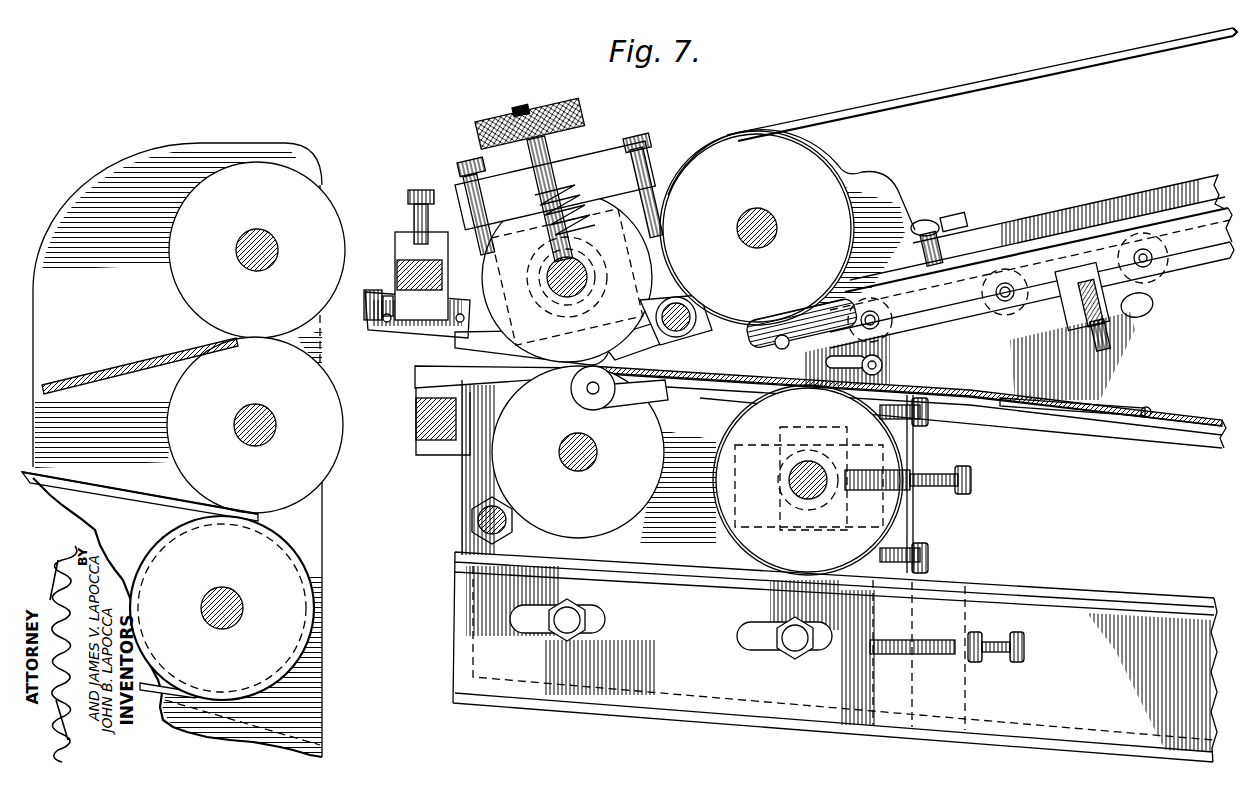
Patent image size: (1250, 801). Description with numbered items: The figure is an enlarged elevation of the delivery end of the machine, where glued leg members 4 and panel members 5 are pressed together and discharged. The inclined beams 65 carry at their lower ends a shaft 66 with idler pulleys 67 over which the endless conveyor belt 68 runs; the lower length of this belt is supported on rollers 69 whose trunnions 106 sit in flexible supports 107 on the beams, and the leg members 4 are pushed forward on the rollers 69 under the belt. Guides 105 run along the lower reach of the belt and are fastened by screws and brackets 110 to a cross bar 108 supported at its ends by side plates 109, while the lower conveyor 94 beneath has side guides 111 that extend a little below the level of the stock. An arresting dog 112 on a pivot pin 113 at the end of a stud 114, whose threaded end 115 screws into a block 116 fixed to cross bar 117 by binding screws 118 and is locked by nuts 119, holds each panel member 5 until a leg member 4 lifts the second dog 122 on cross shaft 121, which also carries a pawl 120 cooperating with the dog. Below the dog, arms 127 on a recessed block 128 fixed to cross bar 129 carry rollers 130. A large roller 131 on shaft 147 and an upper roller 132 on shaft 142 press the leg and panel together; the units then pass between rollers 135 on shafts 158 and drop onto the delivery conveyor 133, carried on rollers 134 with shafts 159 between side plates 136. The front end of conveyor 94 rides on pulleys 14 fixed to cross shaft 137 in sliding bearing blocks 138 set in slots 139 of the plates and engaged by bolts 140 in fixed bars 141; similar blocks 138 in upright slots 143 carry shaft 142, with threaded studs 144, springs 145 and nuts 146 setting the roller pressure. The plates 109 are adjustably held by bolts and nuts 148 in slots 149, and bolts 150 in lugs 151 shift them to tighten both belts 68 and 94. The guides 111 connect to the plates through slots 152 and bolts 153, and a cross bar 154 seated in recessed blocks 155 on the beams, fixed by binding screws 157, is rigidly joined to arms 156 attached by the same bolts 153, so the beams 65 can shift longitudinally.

The leg member 4 is at (76, 378).
The panel member 5 is at (118, 364).
The pulleys 14 is at (898, 476).
The inclined beams 65 is at (1200, 252).
The shaft 66 is at (762, 222).
The idler pulleys 67 is at (727, 178).
The endless conveyor belt 68 is at (990, 82).
The rollers 69 is at (1155, 272).
The conveyor 94 is at (1115, 592).
The guides 105 is at (1192, 178).
The trunnions or shafts 106 is at (1007, 288).
The flexible supports 107 is at (1170, 268).
The cross bar 108 is at (918, 222).
The side plates 109 is at (475, 487).
The screws and brackets 110 is at (963, 224).
The guides 111 is at (1212, 443).
The arresting dog 112 is at (585, 374).
The pivot pin 113 is at (610, 388).
The stud 114 is at (455, 352).
The threaded end 115 is at (378, 303).
The block 116 is at (400, 240).
The cross bar 117 is at (397, 272).
The binding screws 118 is at (418, 190).
The nuts 119 is at (392, 322).
The pawl 120 is at (665, 305).
The cross shaft 121 is at (690, 308).
The second fixed dog 122 is at (660, 348).
The arms or plates 127 is at (416, 376).
The recessed block 128 is at (418, 447).
The cross bar 129 is at (416, 418).
The rollers 130 is at (607, 403).
The large roller 131 is at (615, 505).
The roller 132 is at (640, 180).
The delivery conveyor 133 is at (85, 495).
The rollers 134 is at (285, 632).
The rollers 135 is at (305, 190).
The side plates 136 is at (312, 694).
The cross shaft 137 is at (790, 481).
The sliding bearing blocks 138 is at (678, 165).
The slots 139 is at (752, 420).
The bolts 140 is at (973, 497).
The fixed bars 141 is at (633, 150).
The shaft 142 is at (547, 276).
The upright slots 143 is at (487, 178).
The threaded studs 144 is at (518, 108).
The spring 145 is at (572, 180).
The nuts 146 is at (577, 99).
The shaft 147 is at (592, 458).
The bolts and nuts 148 is at (580, 620).
The slots 149 is at (528, 635).
The bolts 150 is at (1000, 668).
The cross bars, projections or lugs 151 is at (880, 690).
The slots 152 is at (775, 352).
The bolts 153 is at (884, 365).
The cross bar 154 is at (1110, 342).
The recessed blocks 155 is at (1072, 276).
The arms 156 is at (1070, 412).
The binding screws 157 is at (1150, 312).
The shafts 158 is at (252, 410).
The shafts 159 is at (232, 606).